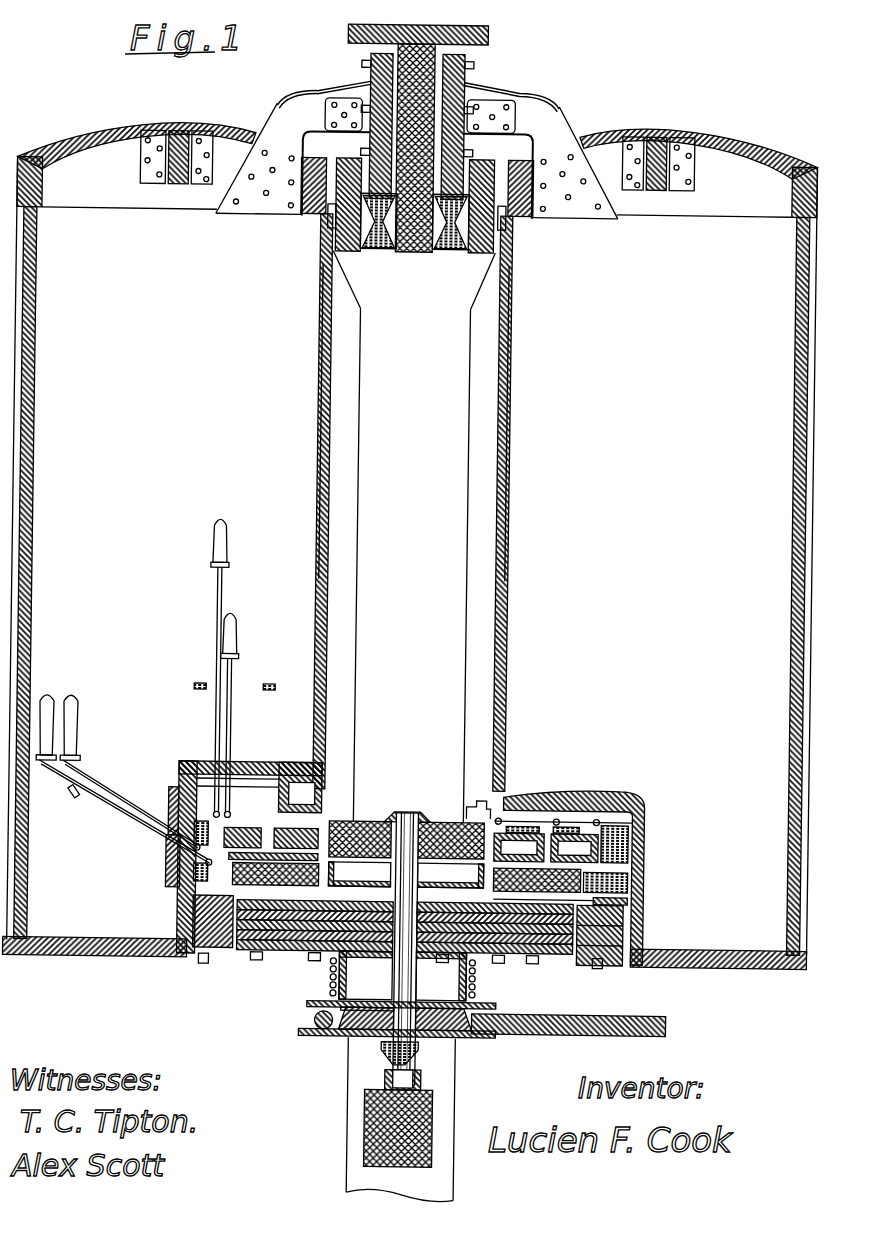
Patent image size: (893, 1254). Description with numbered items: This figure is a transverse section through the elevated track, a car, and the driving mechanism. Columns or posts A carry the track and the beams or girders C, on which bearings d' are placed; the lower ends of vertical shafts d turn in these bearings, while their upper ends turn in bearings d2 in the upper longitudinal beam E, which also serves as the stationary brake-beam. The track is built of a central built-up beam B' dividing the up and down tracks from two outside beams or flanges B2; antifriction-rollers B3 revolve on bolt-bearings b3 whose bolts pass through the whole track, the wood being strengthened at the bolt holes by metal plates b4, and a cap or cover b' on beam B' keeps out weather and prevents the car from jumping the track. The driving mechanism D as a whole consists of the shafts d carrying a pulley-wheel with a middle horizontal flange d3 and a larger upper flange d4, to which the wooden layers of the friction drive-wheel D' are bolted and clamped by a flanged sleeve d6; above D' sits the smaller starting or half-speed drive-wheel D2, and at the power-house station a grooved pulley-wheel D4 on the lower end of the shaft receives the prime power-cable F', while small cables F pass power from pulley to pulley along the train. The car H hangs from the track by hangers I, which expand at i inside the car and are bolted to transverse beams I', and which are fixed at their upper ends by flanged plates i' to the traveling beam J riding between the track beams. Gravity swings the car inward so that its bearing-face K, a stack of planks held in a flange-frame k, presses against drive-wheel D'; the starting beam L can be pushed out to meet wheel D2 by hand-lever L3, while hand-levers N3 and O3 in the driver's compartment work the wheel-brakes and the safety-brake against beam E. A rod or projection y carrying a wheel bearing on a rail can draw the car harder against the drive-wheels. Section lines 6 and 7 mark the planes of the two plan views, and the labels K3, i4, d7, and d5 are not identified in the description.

The cap or cover b' is at (432, 22).
The central built-up beam B' is at (415, 162).
The traveling beam J is at (464, 78).
The hanger I is at (418, 149).
The transverse beam I' is at (417, 168).
The hanger expansion i is at (417, 158).
The flanged plate i' is at (491, 115).
The outside beam or flange B2 is at (417, 192).
The antifriction-roller B3 is at (388, 238).
The bolt-bearing b3 is at (325, 222).
The metal plate b4 is at (502, 224).
The car H is at (182, 334).
The column or post A is at (409, 747).
The control rod K3 is at (222, 667).
The hand-lever N3 is at (247, 714).
The hand-lever L3 is at (123, 769).
The hand-lever O3 is at (130, 762).
The lever bracket i4 is at (175, 836).
The valve block d7 is at (277, 879).
The longitudinal brake-beam E is at (407, 823).
The bearing d2 is at (418, 806).
The rod or projection y is at (478, 800).
The starting or half-speed drive-wheel D2 is at (359, 873).
The flanged sleeve d6 is at (450, 883).
The vertical shaft d is at (387, 948).
The bearing-face K is at (225, 952).
The flange-frame k is at (636, 906).
The starting beam L is at (544, 893).
The section line 7 is at (604, 872).
The section line 6 is at (636, 822).
The friction drive-wheel D' is at (415, 970).
The driving mechanism D is at (366, 975).
The chamber d5 is at (441, 976).
The horizontal flange d3 is at (334, 976).
The upper flange d4 is at (500, 956).
The small cable F is at (402, 1004).
The prime power-cable F' is at (568, 1012).
The grooved pulley-wheel D4 is at (341, 1035).
The bearing d' is at (414, 1078).
The beam or girder C is at (372, 1127).